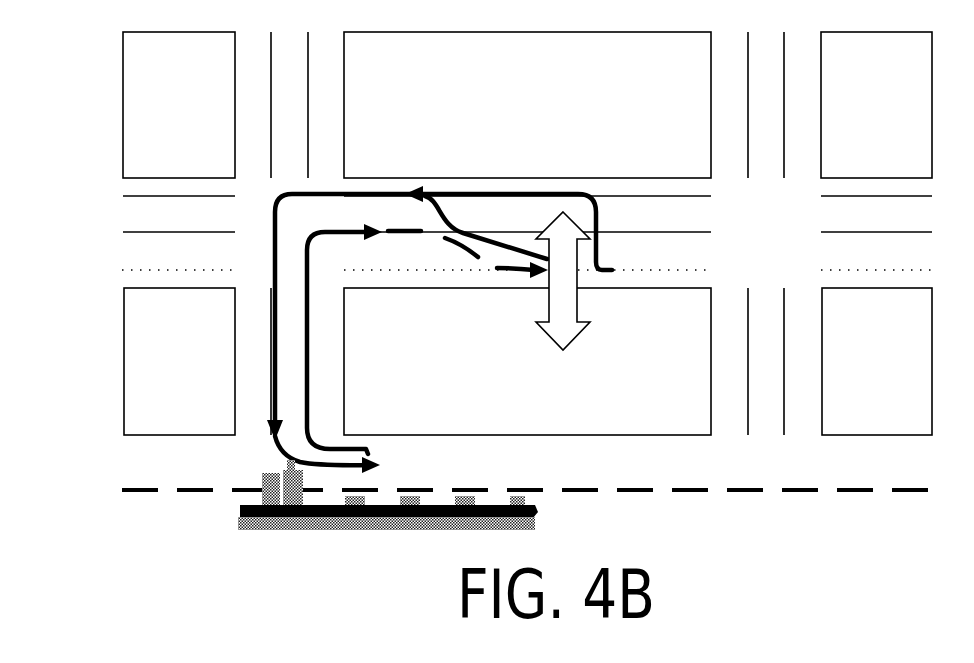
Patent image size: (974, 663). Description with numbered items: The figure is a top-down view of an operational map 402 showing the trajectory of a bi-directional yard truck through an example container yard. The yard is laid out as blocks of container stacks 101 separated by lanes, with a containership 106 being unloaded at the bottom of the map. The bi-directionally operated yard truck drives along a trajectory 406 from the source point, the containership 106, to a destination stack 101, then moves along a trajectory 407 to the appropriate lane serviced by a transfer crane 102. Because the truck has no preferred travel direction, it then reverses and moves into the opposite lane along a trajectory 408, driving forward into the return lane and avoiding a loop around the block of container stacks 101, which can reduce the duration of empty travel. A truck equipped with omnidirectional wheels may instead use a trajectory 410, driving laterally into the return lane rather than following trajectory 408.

The container stacks 101 is at (161, 114).
The operational map 402 is at (41, 253).
The transfer crane 102 is at (578, 300).
The containership 106 is at (375, 563).
The trajectory 406 is at (341, 261).
The trajectory 407 is at (431, 273).
The trajectory 408 is at (466, 223).
The trajectory 410 is at (599, 223).